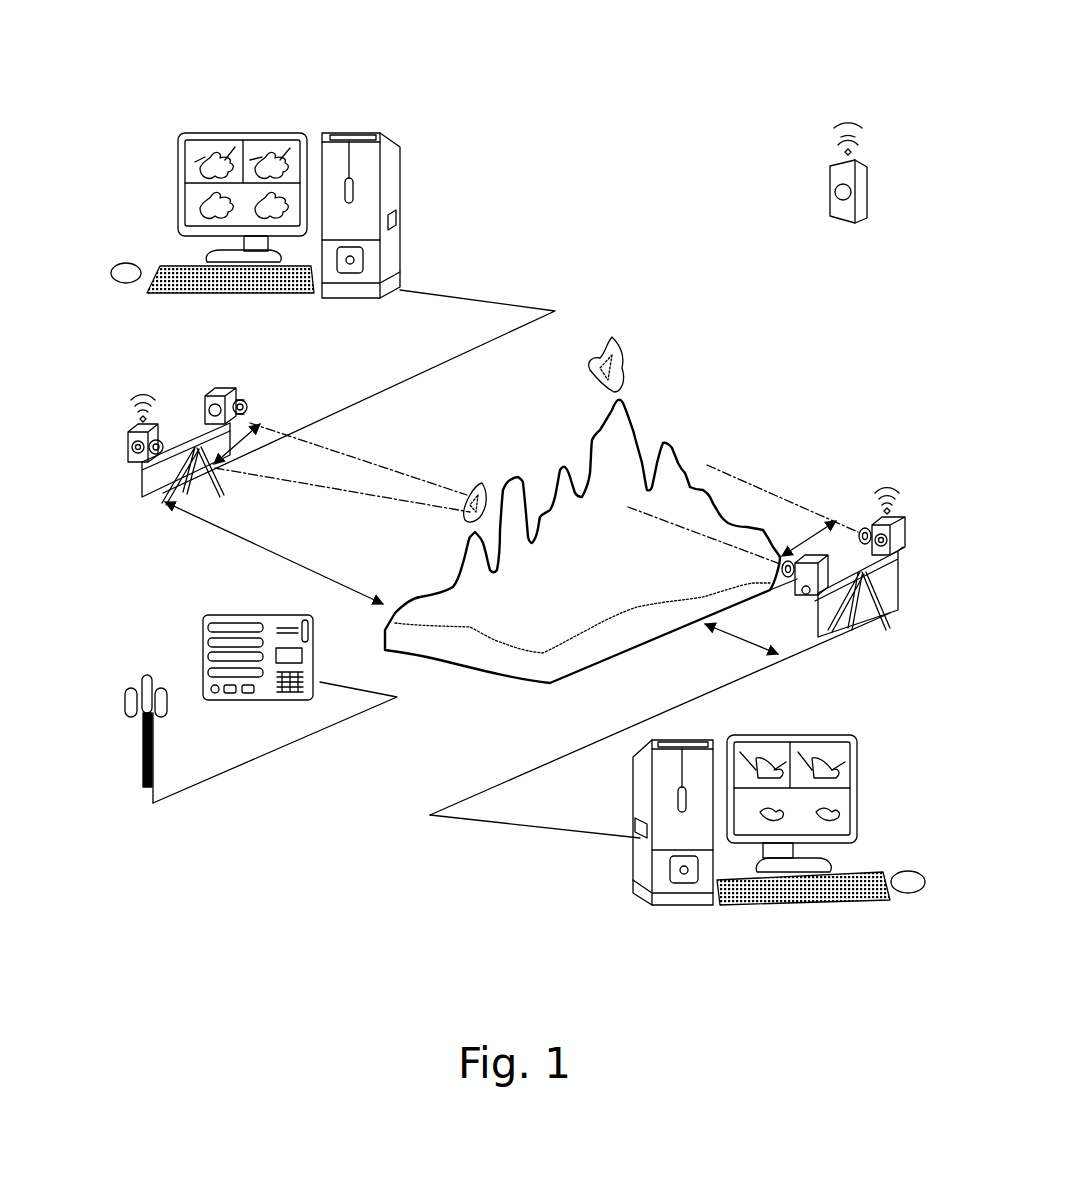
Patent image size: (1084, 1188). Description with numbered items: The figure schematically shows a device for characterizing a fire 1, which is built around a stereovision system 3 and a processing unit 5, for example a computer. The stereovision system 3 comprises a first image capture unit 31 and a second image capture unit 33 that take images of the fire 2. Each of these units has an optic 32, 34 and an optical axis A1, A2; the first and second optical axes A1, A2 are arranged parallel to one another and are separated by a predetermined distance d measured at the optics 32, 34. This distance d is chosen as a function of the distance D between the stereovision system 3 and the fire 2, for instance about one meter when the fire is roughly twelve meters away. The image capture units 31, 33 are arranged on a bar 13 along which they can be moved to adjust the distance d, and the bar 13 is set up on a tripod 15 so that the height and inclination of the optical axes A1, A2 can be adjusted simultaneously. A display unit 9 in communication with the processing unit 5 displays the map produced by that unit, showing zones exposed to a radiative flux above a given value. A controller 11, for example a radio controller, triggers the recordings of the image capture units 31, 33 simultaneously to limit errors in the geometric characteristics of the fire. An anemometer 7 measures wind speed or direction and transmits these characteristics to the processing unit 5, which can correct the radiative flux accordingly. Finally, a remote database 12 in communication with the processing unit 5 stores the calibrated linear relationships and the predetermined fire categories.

The device for characterizing a fire 1 is at (784, 62).
The fire 2 is at (668, 458).
The stereovision system 3 is at (872, 552).
The processing unit 5 is at (779, 865).
The anemometer 7 is at (122, 703).
The display unit 9 is at (856, 782).
The controller 11 is at (862, 193).
The database 12 is at (255, 702).
The bar 13 is at (878, 565).
The tripod 15 is at (890, 612).
The first image capture unit 31 is at (896, 505).
The first optic 32 is at (866, 527).
The second image capture unit 33 is at (815, 641).
The second optic 34 is at (790, 578).
The first optical axis A1 is at (780, 490).
The second optical axis A2 is at (665, 522).
The predetermined distance d is at (802, 544).
The distance D is at (741, 627).